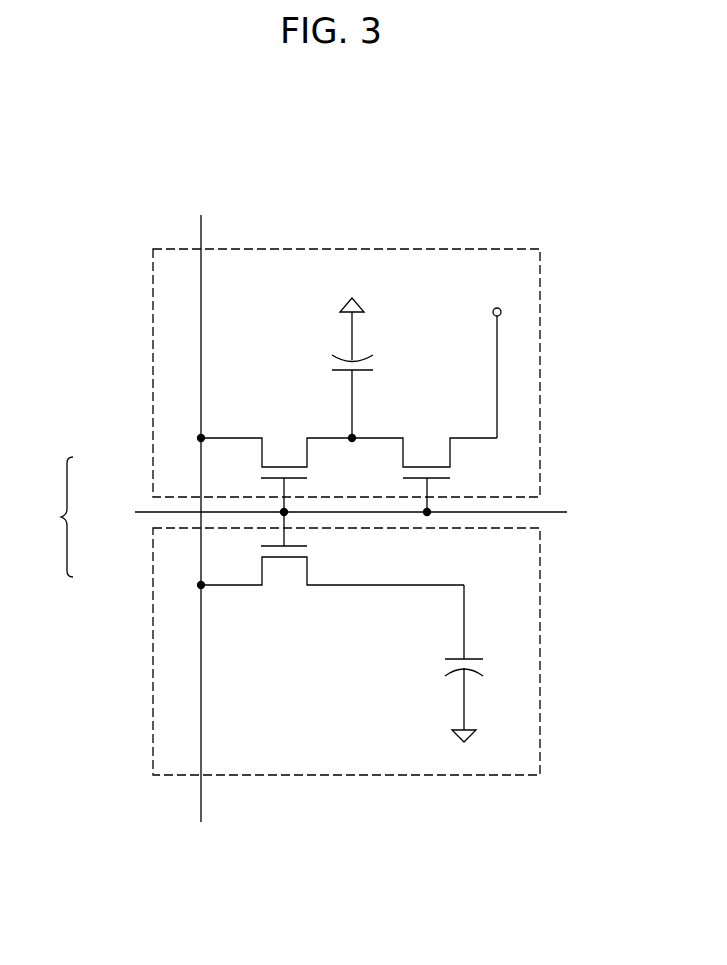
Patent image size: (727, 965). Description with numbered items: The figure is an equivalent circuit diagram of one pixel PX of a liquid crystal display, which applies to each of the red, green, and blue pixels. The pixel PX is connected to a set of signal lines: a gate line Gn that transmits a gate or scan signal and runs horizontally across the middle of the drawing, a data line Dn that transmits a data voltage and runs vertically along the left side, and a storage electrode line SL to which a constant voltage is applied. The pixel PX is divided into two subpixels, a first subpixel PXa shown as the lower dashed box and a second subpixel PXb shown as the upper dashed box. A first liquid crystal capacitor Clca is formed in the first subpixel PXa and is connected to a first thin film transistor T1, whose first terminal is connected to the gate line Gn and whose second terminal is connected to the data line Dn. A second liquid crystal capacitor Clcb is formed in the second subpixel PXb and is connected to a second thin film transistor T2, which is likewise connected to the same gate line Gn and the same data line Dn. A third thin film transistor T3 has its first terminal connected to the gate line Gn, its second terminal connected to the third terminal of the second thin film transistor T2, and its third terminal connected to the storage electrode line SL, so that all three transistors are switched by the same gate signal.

The data line Dn is at (201, 504).
The gate line Gn is at (366, 512).
The storage electrode line SL is at (494, 361).
The first thin film transistor T1 is at (331, 563).
The second thin film transistor T2 is at (275, 464).
The third thin film transistor T3 is at (423, 464).
The first liquid crystal capacitor Clca is at (437, 663).
The second liquid crystal capacitor Clcb is at (326, 368).
The pixel PX is at (53, 517).
The first subpixel PXa is at (151, 571).
The second subpixel PXb is at (151, 466).